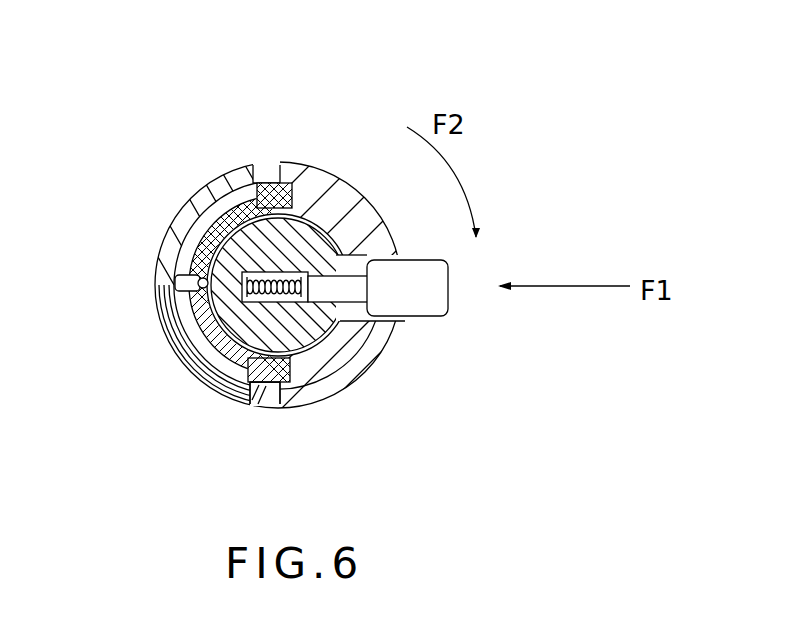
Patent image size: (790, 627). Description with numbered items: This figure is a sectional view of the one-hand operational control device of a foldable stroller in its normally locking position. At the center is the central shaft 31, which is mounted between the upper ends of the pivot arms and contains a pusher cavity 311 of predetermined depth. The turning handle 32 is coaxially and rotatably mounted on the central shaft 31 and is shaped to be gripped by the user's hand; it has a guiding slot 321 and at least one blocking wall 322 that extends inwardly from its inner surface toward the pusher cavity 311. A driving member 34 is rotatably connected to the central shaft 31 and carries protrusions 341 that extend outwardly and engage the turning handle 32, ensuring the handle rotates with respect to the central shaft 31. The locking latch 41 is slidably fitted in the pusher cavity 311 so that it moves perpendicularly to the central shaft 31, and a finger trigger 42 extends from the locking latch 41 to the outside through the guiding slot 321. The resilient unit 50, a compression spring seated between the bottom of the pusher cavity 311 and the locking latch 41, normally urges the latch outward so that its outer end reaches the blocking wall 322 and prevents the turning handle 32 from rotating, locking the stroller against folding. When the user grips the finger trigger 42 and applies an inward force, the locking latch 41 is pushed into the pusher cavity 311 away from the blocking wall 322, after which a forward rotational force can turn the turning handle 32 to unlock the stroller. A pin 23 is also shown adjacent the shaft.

The pin 23 is at (177, 279).
The central shaft 31 is at (232, 305).
The pusher cavity 311 is at (252, 383).
The turning handle 32 is at (343, 197).
The guiding slot 321 is at (387, 322).
The blocking wall 322 is at (349, 256).
The driving member 34 is at (195, 272).
The protrusion 341 is at (290, 194).
The locking latch 41 is at (327, 291).
The finger trigger 42 is at (427, 303).
The resilient unit 50 is at (268, 271).